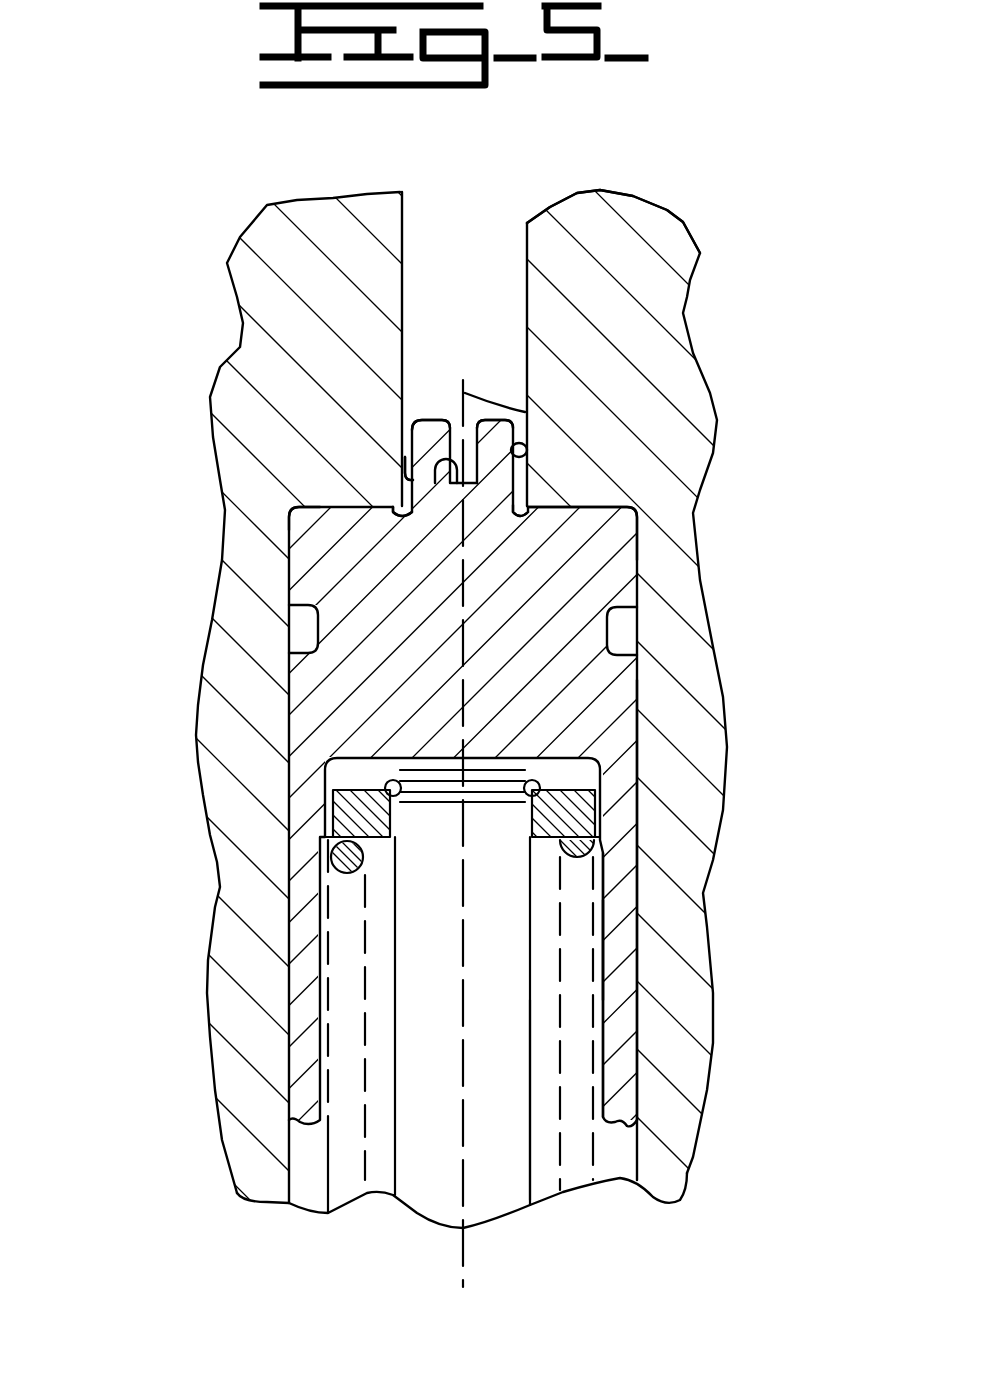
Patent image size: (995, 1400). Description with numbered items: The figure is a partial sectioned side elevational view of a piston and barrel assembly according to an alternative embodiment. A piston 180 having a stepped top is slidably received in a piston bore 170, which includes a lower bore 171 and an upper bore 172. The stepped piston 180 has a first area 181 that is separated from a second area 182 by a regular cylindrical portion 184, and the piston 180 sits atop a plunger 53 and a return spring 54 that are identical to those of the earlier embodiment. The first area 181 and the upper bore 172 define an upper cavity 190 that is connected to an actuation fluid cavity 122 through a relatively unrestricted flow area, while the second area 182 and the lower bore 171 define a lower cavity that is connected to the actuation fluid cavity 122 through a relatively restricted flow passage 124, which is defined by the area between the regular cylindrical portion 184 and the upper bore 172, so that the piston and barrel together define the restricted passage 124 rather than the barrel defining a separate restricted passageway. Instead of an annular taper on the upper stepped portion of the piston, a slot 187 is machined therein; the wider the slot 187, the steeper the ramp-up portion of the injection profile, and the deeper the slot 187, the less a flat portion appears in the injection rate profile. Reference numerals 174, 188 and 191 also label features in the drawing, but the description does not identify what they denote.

The actuation fluid cavity 122 is at (500, 278).
The restricted flow passage 124 is at (395, 487).
The plunger 53 is at (533, 1047).
The return spring 54 is at (597, 917).
The piston bore 170 is at (637, 727).
The lower bore 171 is at (289, 697).
The upper bore 172 is at (525, 455).
The shoulder 174 is at (516, 508).
The piston 180 is at (637, 683).
The first area 181 is at (440, 420).
The second area 182 is at (596, 506).
The regular cylindrical portion 184 is at (408, 436).
The slot 187 is at (527, 412).
The notch 188 is at (430, 505).
The upper cavity 190 is at (510, 373).
The shoulder 191 is at (292, 523).